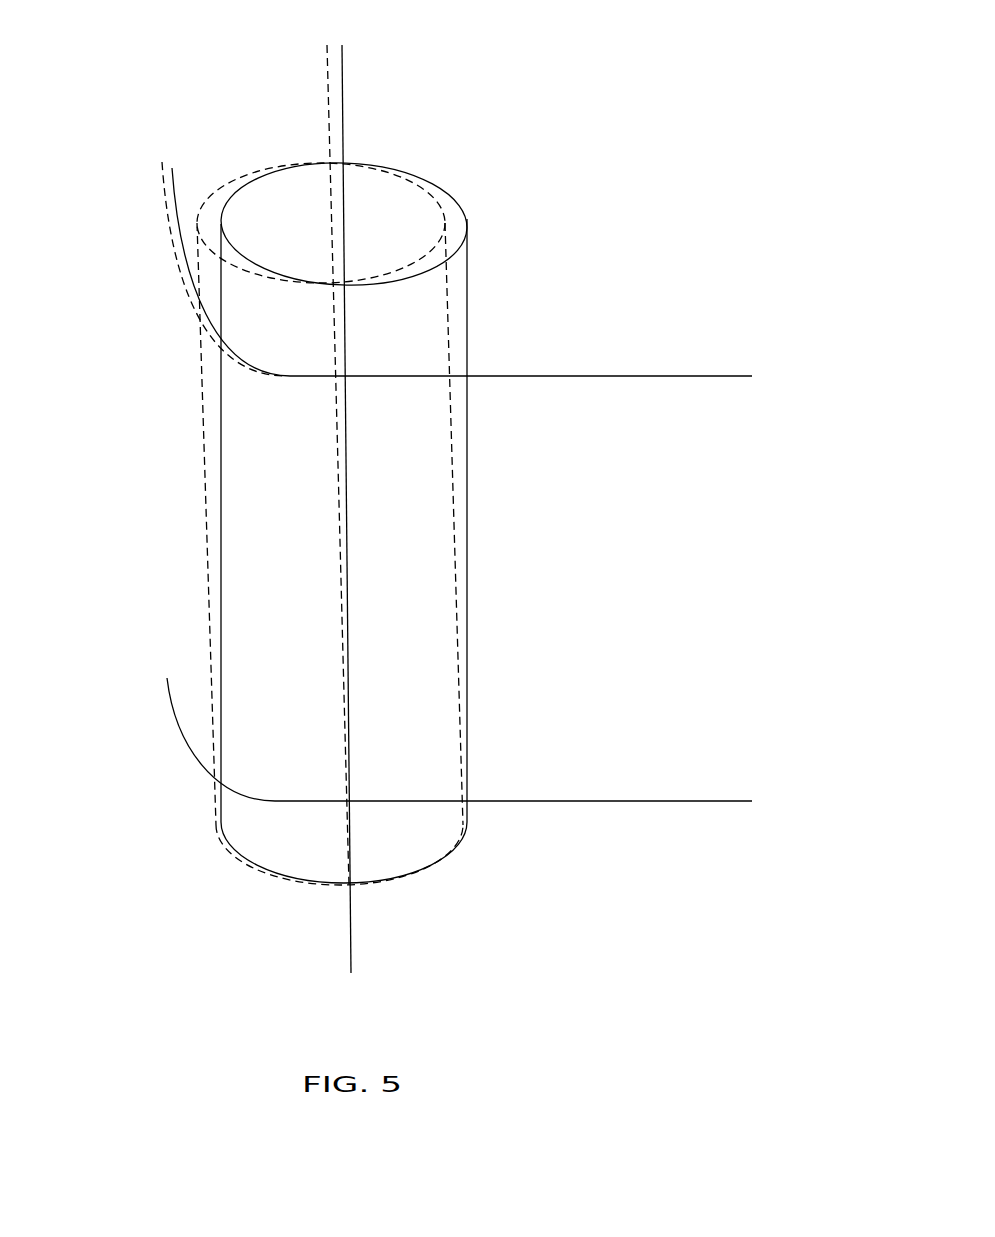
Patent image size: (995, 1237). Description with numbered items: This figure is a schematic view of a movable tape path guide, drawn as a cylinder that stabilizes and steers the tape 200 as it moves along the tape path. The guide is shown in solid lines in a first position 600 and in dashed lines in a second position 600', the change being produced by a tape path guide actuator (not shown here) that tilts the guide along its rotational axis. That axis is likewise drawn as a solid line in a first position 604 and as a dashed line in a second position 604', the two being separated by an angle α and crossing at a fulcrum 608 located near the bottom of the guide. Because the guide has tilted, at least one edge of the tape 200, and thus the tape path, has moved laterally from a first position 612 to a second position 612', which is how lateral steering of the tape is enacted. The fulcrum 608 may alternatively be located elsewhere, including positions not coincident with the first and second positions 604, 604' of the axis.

The first position of the rotational axis 604 is at (405, 509).
The second position of the rotational axis 604' is at (279, 465).
The first position of the tape path guide 600 is at (414, 521).
The second position of the tape path guide 600' is at (299, 496).
The first position of the tape edge 612 is at (462, 272).
The second position of the tape edge 612' is at (194, 269).
The fulcrum 608 is at (337, 787).
The tape 200 is at (637, 567).